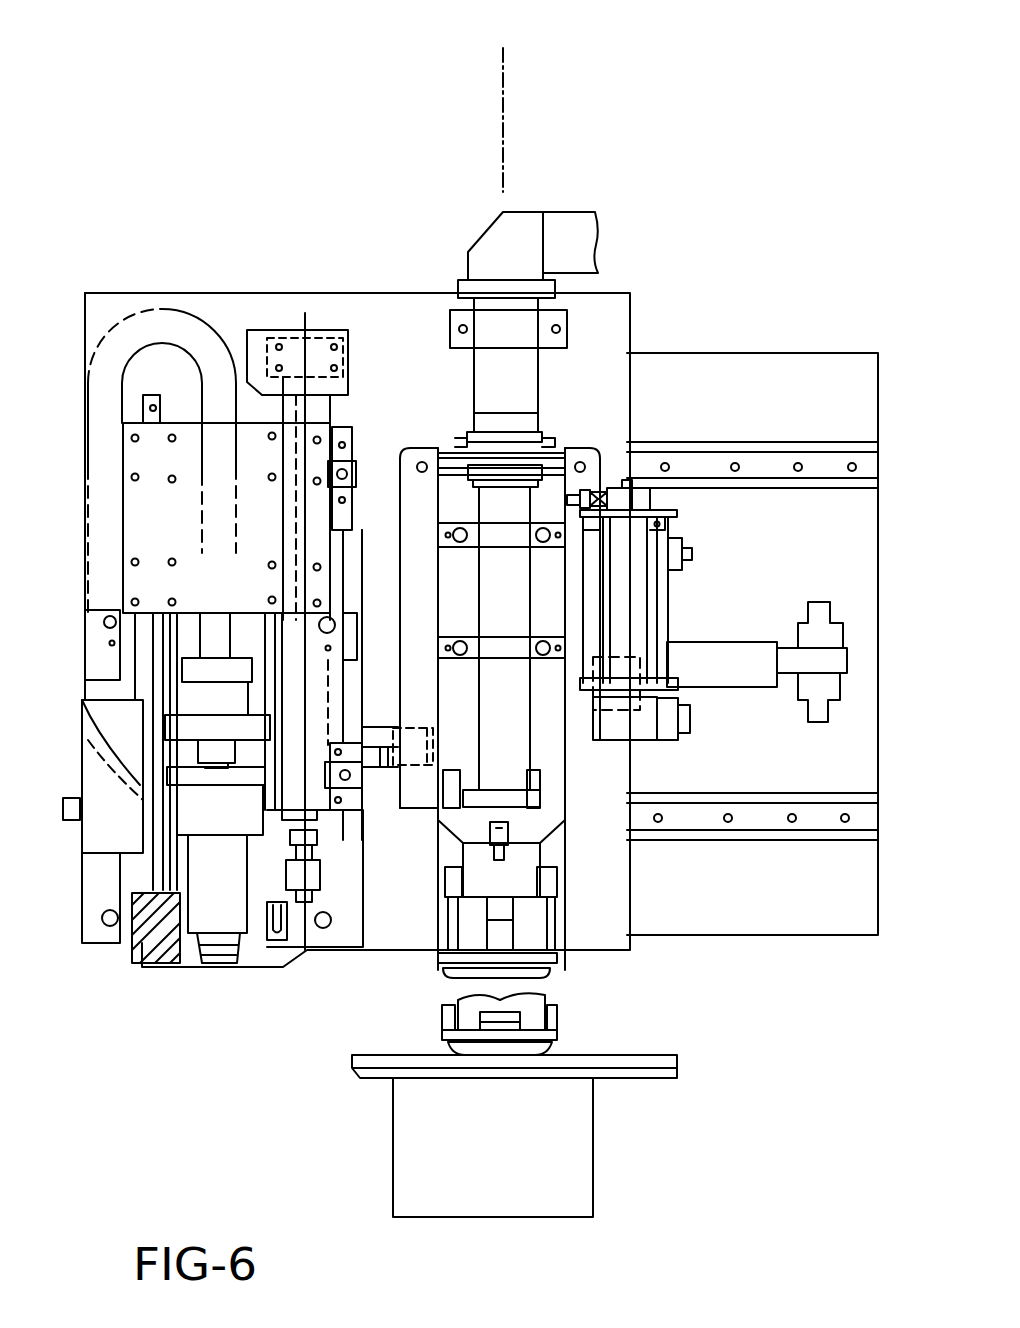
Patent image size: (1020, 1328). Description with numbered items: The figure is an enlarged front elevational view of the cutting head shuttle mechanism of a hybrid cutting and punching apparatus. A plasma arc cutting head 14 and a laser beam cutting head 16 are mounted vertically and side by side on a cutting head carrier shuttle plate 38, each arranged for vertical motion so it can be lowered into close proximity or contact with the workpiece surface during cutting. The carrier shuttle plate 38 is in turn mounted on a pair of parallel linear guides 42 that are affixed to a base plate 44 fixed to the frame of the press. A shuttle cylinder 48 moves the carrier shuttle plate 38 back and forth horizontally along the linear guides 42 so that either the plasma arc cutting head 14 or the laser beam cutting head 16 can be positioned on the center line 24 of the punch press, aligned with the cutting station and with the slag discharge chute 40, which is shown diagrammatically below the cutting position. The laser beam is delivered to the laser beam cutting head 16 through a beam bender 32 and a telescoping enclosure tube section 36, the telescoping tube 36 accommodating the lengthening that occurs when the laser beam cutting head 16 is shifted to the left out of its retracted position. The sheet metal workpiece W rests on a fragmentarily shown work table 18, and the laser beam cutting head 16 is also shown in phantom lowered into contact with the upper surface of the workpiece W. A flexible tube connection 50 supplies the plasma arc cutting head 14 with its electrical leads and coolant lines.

The plasma arc cutting head 14 is at (199, 978).
The laser beam cutting head 16 is at (565, 968).
The work table 18 is at (358, 1092).
The center line 24 is at (502, 82).
The beam bender 32 is at (462, 238).
The telescoping enclosure tube section 36 is at (565, 212).
The cutting head carrier shuttle plate 38 is at (232, 325).
The slag discharge chute 40 is at (393, 1185).
The linear guides 42 is at (765, 440).
The base plate 44 is at (878, 937).
The shuttle cylinder 48 is at (745, 636).
The flexible tube connection 50 is at (66, 822).
The workpiece W is at (360, 1043).